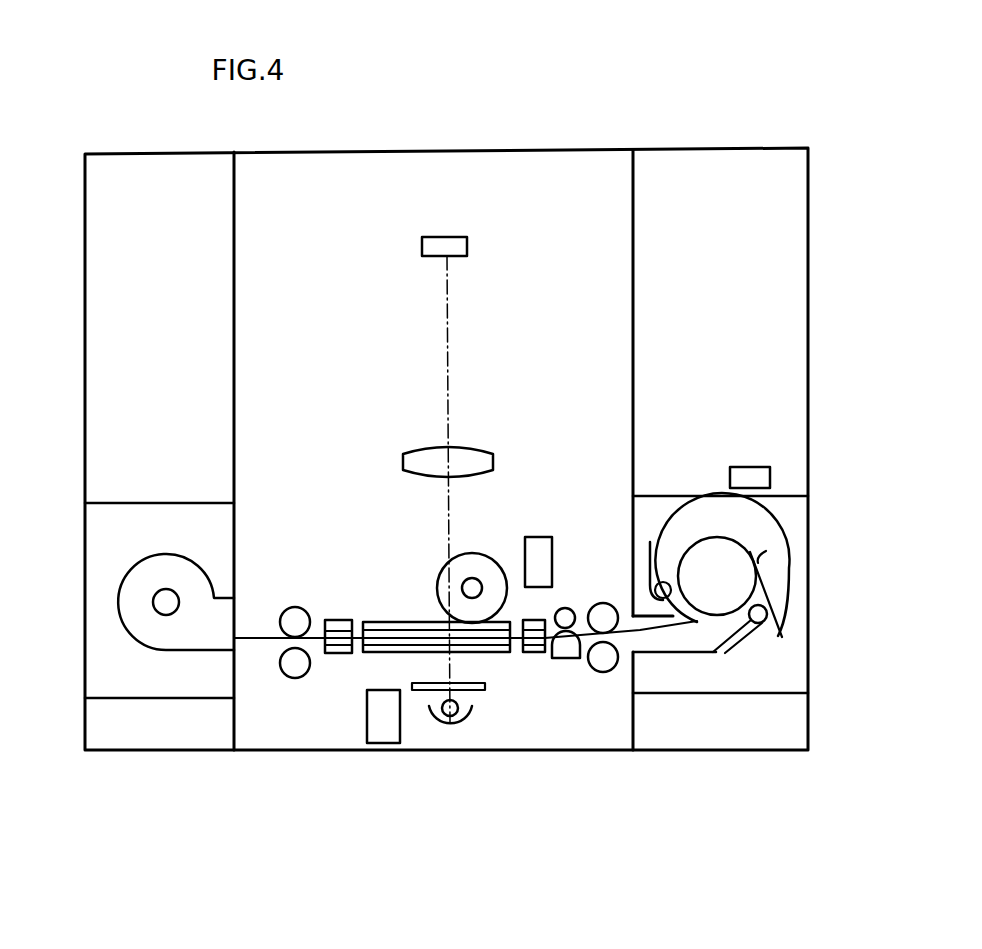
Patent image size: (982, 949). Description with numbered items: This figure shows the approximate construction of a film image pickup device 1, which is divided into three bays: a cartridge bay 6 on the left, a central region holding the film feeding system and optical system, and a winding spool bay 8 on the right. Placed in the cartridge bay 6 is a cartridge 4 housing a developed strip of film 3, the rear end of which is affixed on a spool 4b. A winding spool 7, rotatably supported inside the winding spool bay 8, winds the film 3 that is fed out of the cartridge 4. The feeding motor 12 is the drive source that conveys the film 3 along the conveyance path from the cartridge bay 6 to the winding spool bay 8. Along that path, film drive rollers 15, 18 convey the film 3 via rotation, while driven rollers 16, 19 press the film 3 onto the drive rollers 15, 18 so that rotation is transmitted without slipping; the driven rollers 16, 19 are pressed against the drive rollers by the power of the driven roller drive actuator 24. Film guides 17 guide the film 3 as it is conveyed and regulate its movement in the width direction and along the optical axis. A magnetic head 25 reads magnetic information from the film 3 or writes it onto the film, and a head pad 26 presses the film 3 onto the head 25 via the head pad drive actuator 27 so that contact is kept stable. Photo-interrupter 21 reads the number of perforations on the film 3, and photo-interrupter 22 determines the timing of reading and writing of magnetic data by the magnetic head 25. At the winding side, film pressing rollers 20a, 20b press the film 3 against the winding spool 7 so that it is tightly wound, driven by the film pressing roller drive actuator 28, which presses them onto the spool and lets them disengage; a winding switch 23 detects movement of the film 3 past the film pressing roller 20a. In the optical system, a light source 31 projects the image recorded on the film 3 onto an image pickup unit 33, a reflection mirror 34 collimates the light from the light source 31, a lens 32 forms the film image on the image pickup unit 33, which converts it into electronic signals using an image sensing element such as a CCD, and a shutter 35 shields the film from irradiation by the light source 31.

The film image pickup device 1 is at (415, 118).
The film 3 is at (663, 627).
The cartridge 4 is at (120, 593).
The spool 4b is at (160, 607).
The cartridge bay 6 is at (97, 520).
The winding spool 7 is at (727, 552).
The winding spool bay 8 is at (795, 510).
The feeding motor 12 is at (439, 576).
The film drive roller 15 is at (297, 607).
The driven roller 16 is at (293, 670).
The film guides 17 is at (495, 652).
The film drive roller 18 is at (605, 603).
The driven roller 19 is at (603, 672).
The film pressing roller 20a is at (736, 628).
The film pressing roller 20b is at (660, 553).
The photo-interrupter 21 is at (337, 654).
The photo-interrupter 22 is at (537, 652).
The winding switch 23 is at (768, 594).
The driven roller drive actuator 24 is at (375, 723).
The magnetic head 25 is at (563, 659).
The head pad 26 is at (567, 606).
The head pad drive actuator 27 is at (535, 550).
The film pressing roller drive actuator 28 is at (760, 470).
The light source 31 is at (460, 720).
The lens 32 is at (468, 453).
The image pickup unit 33 is at (458, 243).
The reflection mirror 34 is at (442, 723).
The shutter 35 is at (485, 691).